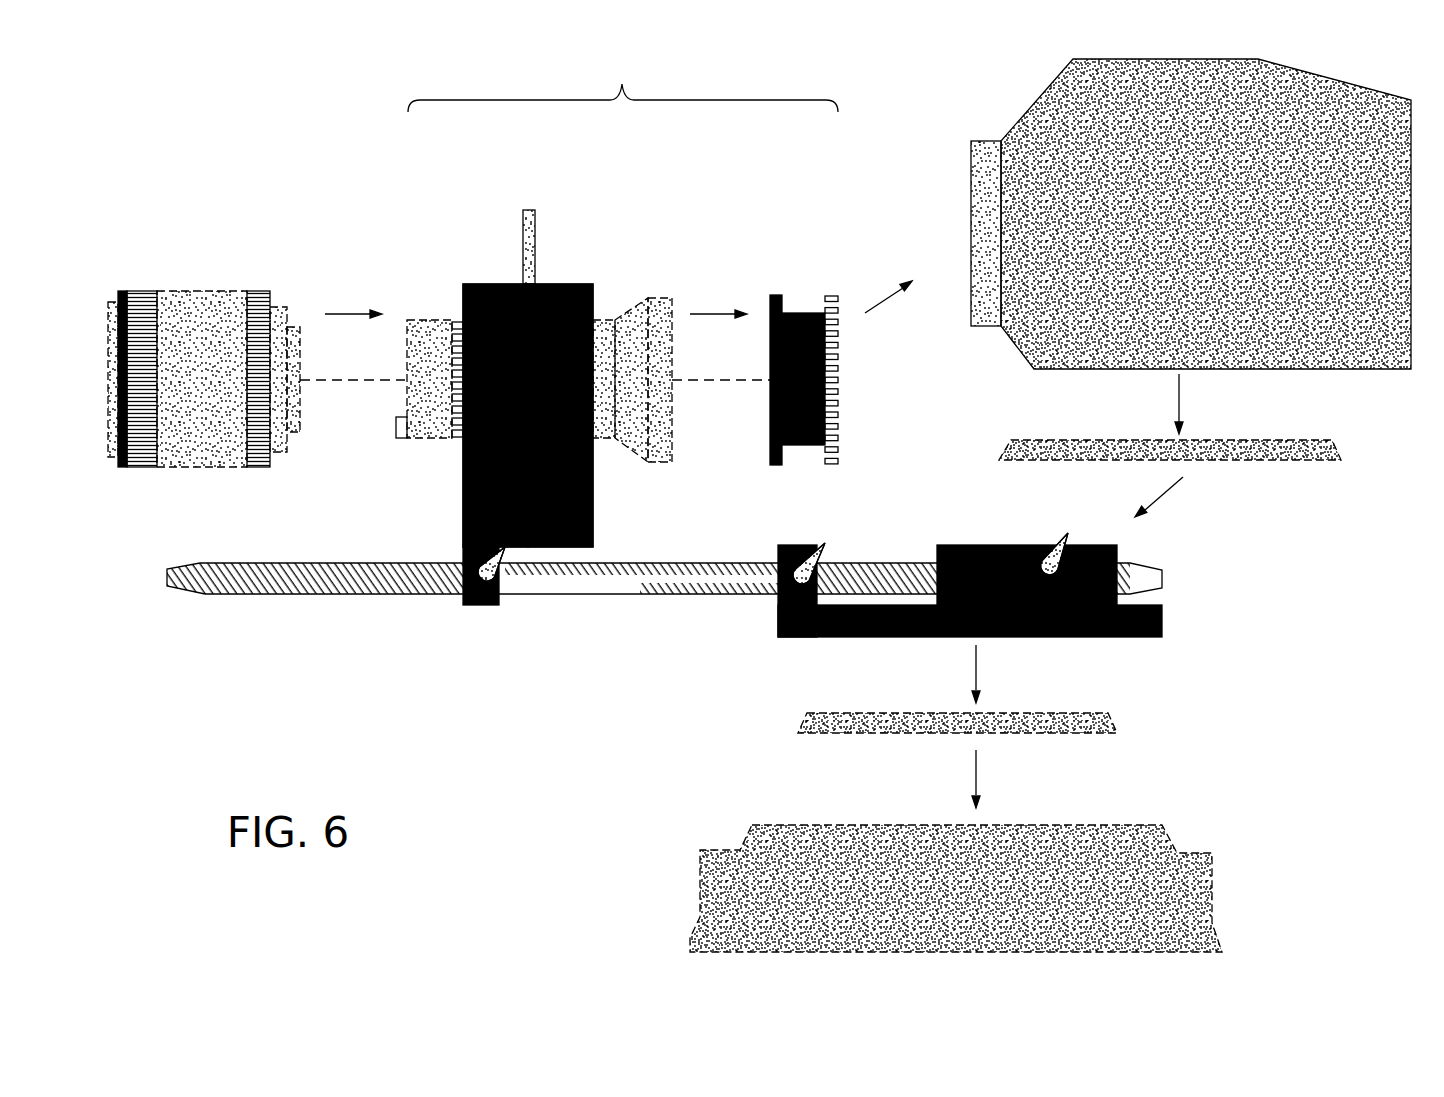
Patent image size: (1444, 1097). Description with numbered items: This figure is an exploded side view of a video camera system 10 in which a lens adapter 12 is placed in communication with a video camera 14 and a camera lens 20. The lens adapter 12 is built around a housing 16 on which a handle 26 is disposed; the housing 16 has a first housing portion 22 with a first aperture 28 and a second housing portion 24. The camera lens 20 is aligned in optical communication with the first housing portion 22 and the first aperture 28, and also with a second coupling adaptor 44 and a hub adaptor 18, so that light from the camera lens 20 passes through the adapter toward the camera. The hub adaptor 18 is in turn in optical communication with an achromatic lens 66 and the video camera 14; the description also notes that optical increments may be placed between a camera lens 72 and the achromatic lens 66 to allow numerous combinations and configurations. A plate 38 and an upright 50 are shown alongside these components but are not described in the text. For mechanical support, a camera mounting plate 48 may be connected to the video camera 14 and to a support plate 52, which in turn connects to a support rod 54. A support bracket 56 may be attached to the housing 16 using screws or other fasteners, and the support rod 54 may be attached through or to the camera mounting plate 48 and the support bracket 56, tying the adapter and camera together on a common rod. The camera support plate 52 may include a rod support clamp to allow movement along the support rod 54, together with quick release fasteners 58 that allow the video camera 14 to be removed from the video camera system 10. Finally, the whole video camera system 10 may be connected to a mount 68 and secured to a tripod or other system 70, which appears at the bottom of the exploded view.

The video camera system 10 is at (520, 853).
The lens adapter 12 is at (623, 74).
The video camera 14 is at (1112, 118).
The housing 16 is at (532, 377).
The hub adaptor 18 is at (663, 297).
The camera lens 20 is at (184, 306).
The first housing portion 22 is at (462, 513).
The second housing portion 24 is at (593, 508).
The handle 26 is at (533, 210).
The first aperture 28 is at (462, 302).
The mounting plate 38 is at (422, 322).
The second coupling adaptor 44 is at (605, 322).
The camera mounting plate 48 is at (1322, 443).
The first bracket 50 is at (785, 545).
The support plate 52 is at (1060, 637).
The support rod 54 is at (645, 580).
The support bracket 56 is at (480, 605).
The quick release fasteners 58 is at (497, 572).
The achromatic lens 66 is at (800, 313).
The mount 68 is at (1093, 723).
The tripod or other system 70 is at (1178, 888).
The camera lens 72 is at (993, 170).